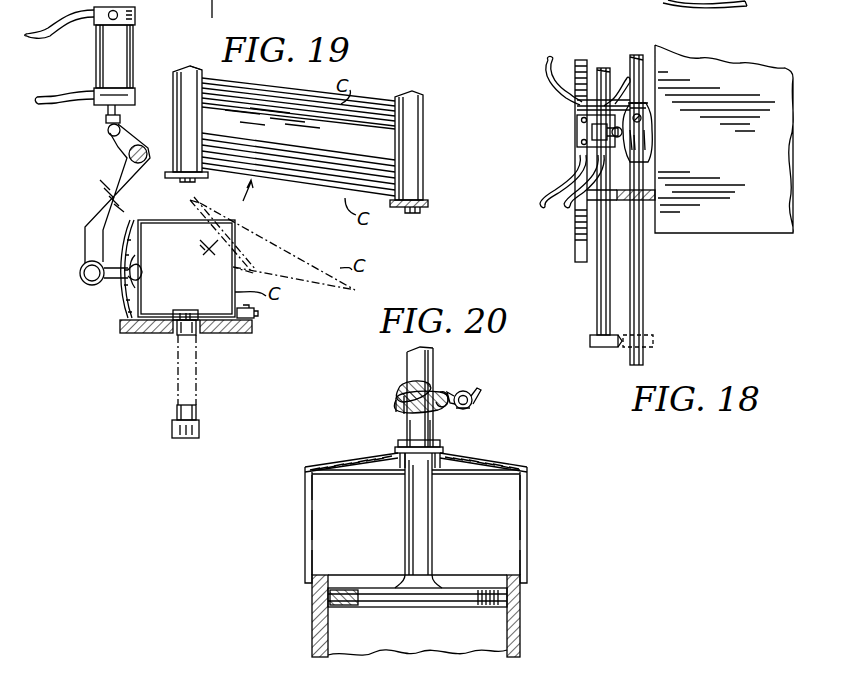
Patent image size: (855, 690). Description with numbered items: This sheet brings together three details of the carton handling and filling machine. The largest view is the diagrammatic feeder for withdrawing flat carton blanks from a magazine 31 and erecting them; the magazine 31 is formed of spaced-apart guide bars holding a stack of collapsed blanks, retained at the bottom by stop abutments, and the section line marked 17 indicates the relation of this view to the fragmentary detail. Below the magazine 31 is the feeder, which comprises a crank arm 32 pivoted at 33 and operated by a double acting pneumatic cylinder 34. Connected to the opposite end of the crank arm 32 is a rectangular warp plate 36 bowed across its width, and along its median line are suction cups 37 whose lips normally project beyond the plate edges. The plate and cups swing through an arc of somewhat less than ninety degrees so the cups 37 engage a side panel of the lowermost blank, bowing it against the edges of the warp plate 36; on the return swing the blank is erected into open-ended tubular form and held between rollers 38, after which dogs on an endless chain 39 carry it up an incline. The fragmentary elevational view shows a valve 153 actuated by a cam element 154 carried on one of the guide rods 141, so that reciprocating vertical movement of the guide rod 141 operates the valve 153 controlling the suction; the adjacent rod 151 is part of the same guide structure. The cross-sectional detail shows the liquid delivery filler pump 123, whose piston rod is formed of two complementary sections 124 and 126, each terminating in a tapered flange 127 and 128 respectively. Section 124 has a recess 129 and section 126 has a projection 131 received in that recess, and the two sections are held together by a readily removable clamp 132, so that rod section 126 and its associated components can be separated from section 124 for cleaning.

In FIG. 19, the section line 17 is at (222, 19).
In FIG. 19, the magazine 31 is at (425, 118).
In FIG. 19, the crank arm 32 is at (115, 181).
In FIG. 19, the pivot 33 is at (142, 143).
In FIG. 19, the double acting pneumatic cylinder 34 is at (130, 52).
In FIG. 19, the warp plate 36 is at (122, 298).
In FIG. 19, the suction cups 37 is at (205, 250).
In FIG. 19, the rollers 38 is at (258, 314).
In FIG. 19, the endless chain 39 is at (178, 338).
In FIG. 20, the filler pump 123 is at (297, 519).
In FIG. 20, the piston rod section 124 is at (407, 360).
In FIG. 20, the piston rod section 126 is at (425, 432).
In FIG. 20, the tapered flange 127 is at (398, 392).
In FIG. 20, the tapered flange 128 is at (396, 405).
In FIG. 20, the recess 129 is at (430, 392).
In FIG. 20, the projection 131 is at (400, 410).
In FIG. 20, the clamp 132 is at (474, 400).
In FIG. 18, the guide rod 141 is at (636, 290).
In FIG. 18, the rod 151 is at (597, 285).
In FIG. 18, the valve 153 is at (577, 135).
In FIG. 18, the cam element 154 is at (588, 36).